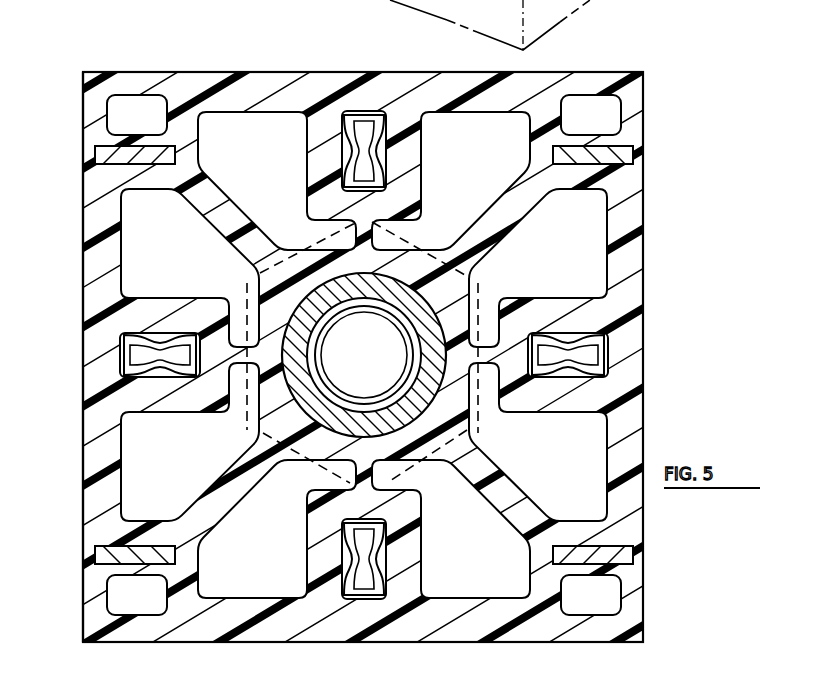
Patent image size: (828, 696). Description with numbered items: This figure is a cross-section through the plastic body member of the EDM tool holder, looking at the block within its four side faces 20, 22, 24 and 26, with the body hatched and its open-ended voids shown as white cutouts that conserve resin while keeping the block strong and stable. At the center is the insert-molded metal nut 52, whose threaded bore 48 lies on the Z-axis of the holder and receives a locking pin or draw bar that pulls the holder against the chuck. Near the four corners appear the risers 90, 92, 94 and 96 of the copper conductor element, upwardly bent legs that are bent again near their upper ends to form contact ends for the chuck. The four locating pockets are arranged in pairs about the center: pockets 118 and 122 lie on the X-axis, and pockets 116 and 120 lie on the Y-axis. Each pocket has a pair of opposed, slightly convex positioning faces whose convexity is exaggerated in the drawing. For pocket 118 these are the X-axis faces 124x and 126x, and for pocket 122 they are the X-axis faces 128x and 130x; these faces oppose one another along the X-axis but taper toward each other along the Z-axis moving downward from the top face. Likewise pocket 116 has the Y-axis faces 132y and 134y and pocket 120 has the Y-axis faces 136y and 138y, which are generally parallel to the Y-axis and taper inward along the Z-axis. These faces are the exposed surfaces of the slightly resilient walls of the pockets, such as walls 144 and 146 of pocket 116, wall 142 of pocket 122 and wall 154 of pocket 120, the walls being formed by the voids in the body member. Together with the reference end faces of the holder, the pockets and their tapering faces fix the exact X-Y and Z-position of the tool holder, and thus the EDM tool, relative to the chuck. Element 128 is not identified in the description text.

The side face 20 is at (645, 207).
The side face 22 is at (567, 641).
The side face 24 is at (83, 233).
The side face 26 is at (228, 72).
The threaded draw-bar-receiving bore 48 is at (328, 377).
The nut 52 is at (398, 270).
The riser 90 is at (97, 562).
The riser 92 is at (95, 155).
The riser 94 is at (628, 153).
The riser 96 is at (623, 557).
The locating pocket 116 is at (350, 520).
The locating pocket 118 is at (122, 352).
The locating pocket 120 is at (368, 166).
The locating pocket 122 is at (547, 362).
The inwardly tapering X-axis face 124x is at (152, 335).
The inwardly tapering X-axis face 126x is at (152, 380).
The right upper cutout 128 is at (560, 312).
The inwardly tapering X-axis face 128x is at (585, 334).
The inwardly tapering X-axis face 130x is at (590, 365).
The inwardly tapering Y-axis face 132y is at (350, 590).
The inwardly tapering Y-axis face 134y is at (388, 572).
The inwardly tapering Y-axis face 136y is at (352, 110).
The inwardly tapering Y-axis face 138y is at (370, 113).
The pocket wall 142 is at (578, 400).
The pocket wall 144 is at (400, 518).
The pocket wall 146 is at (325, 553).
The pocket wall 154 is at (478, 283).